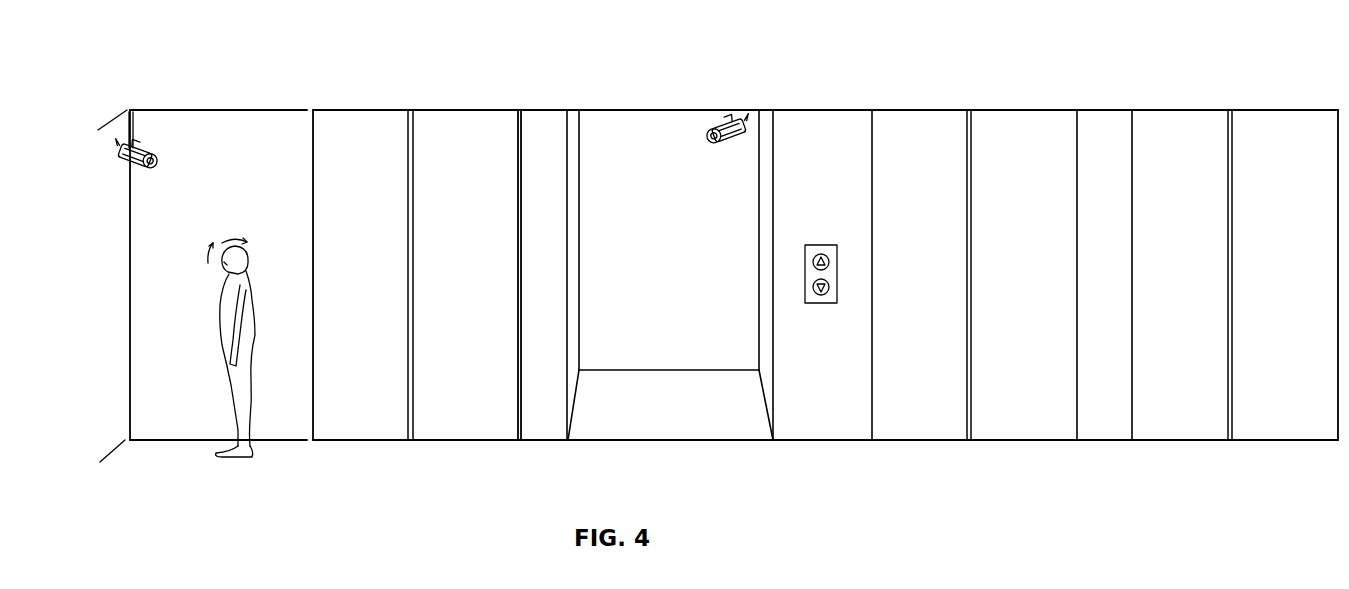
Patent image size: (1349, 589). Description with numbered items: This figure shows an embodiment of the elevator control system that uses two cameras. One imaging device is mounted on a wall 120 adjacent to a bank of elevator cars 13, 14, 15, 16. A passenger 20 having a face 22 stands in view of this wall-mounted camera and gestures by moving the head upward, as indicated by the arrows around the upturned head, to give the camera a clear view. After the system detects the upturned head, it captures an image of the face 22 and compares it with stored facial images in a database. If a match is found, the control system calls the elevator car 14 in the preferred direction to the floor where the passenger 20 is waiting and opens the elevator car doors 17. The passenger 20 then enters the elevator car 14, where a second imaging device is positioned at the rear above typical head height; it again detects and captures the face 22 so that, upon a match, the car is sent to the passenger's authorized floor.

The elevator car 13 is at (445, 123).
The elevator car 14 is at (663, 128).
The elevator car 15 is at (1015, 128).
The elevator car 16 is at (1263, 125).
The elevator car doors 17 is at (770, 441).
The passenger 20 is at (237, 347).
The face 22 is at (223, 269).
The wall 120 is at (98, 431).